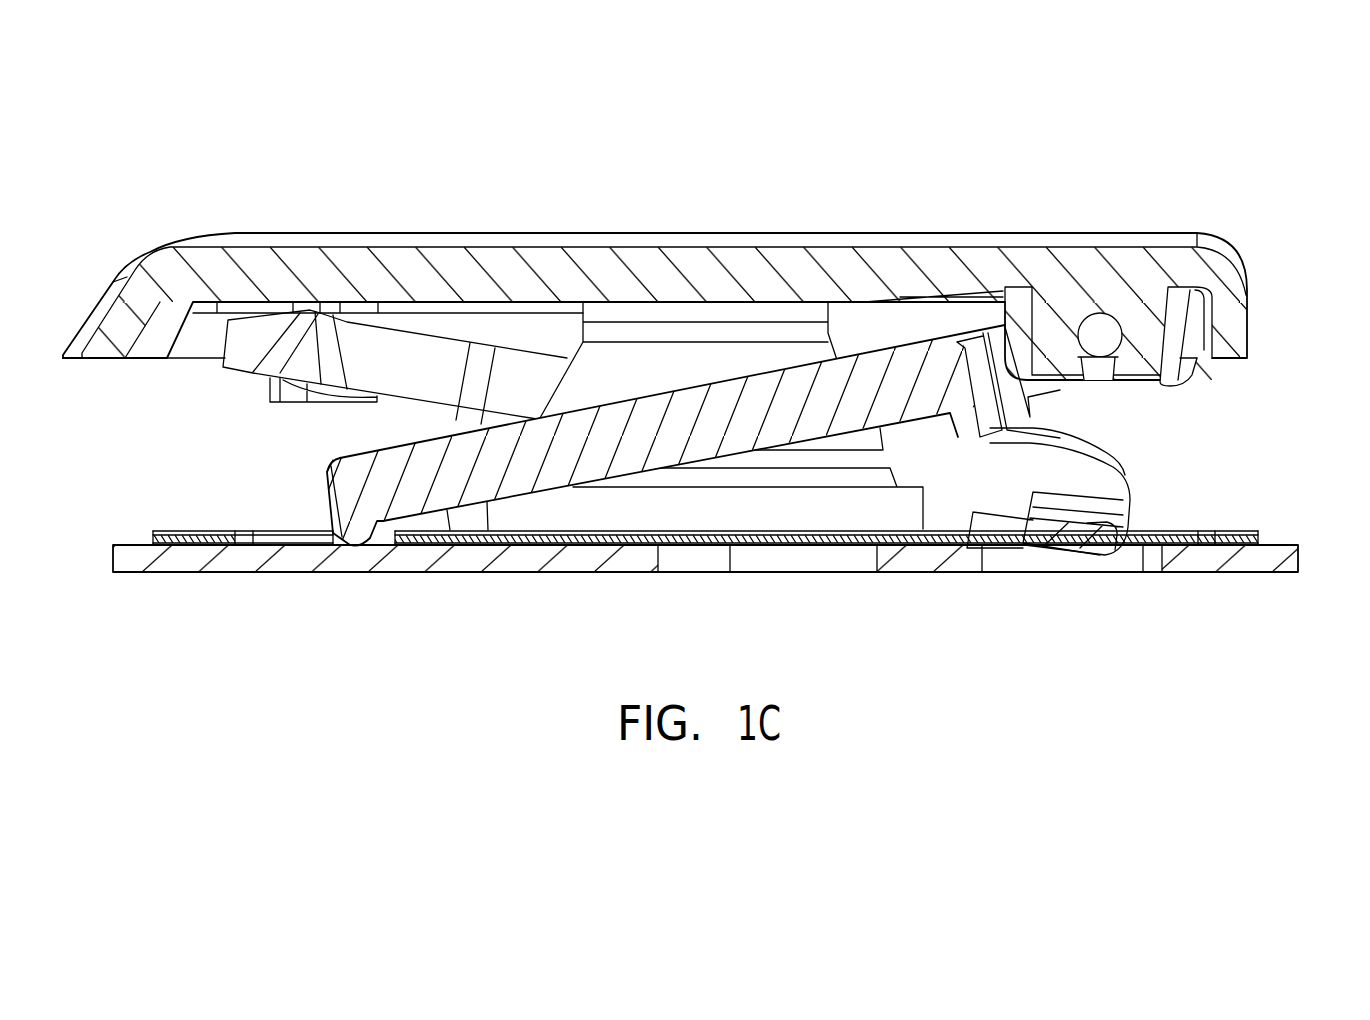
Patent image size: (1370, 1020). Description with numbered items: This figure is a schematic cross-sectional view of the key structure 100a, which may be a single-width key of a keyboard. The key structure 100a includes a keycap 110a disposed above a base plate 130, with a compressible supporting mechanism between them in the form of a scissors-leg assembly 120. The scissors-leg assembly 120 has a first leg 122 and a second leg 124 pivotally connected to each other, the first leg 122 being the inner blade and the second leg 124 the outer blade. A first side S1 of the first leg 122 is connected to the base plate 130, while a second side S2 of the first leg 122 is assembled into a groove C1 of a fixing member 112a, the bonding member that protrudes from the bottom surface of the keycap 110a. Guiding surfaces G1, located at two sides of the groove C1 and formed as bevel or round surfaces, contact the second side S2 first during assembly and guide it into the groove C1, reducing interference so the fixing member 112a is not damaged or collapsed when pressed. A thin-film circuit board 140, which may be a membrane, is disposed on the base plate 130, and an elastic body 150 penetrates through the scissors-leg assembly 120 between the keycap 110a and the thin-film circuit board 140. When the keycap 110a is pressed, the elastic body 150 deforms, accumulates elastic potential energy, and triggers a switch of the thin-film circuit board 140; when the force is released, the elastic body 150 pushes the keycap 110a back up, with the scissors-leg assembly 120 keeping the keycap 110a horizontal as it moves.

The key structure 100a is at (716, 411).
The keycap 110a is at (970, 235).
The fixing member 112a is at (1150, 338).
The scissors-leg assembly 120 is at (743, 432).
The first leg 122 is at (712, 435).
The second leg 124 is at (1090, 478).
The base plate 130 is at (1268, 573).
The thin-film circuit board 140 is at (1227, 543).
The elastic body 150 is at (675, 367).
The first side S1 is at (316, 500).
The second side S2 is at (1120, 300).
The guiding surface G1 is at (1113, 378).
The groove C1 is at (1114, 367).